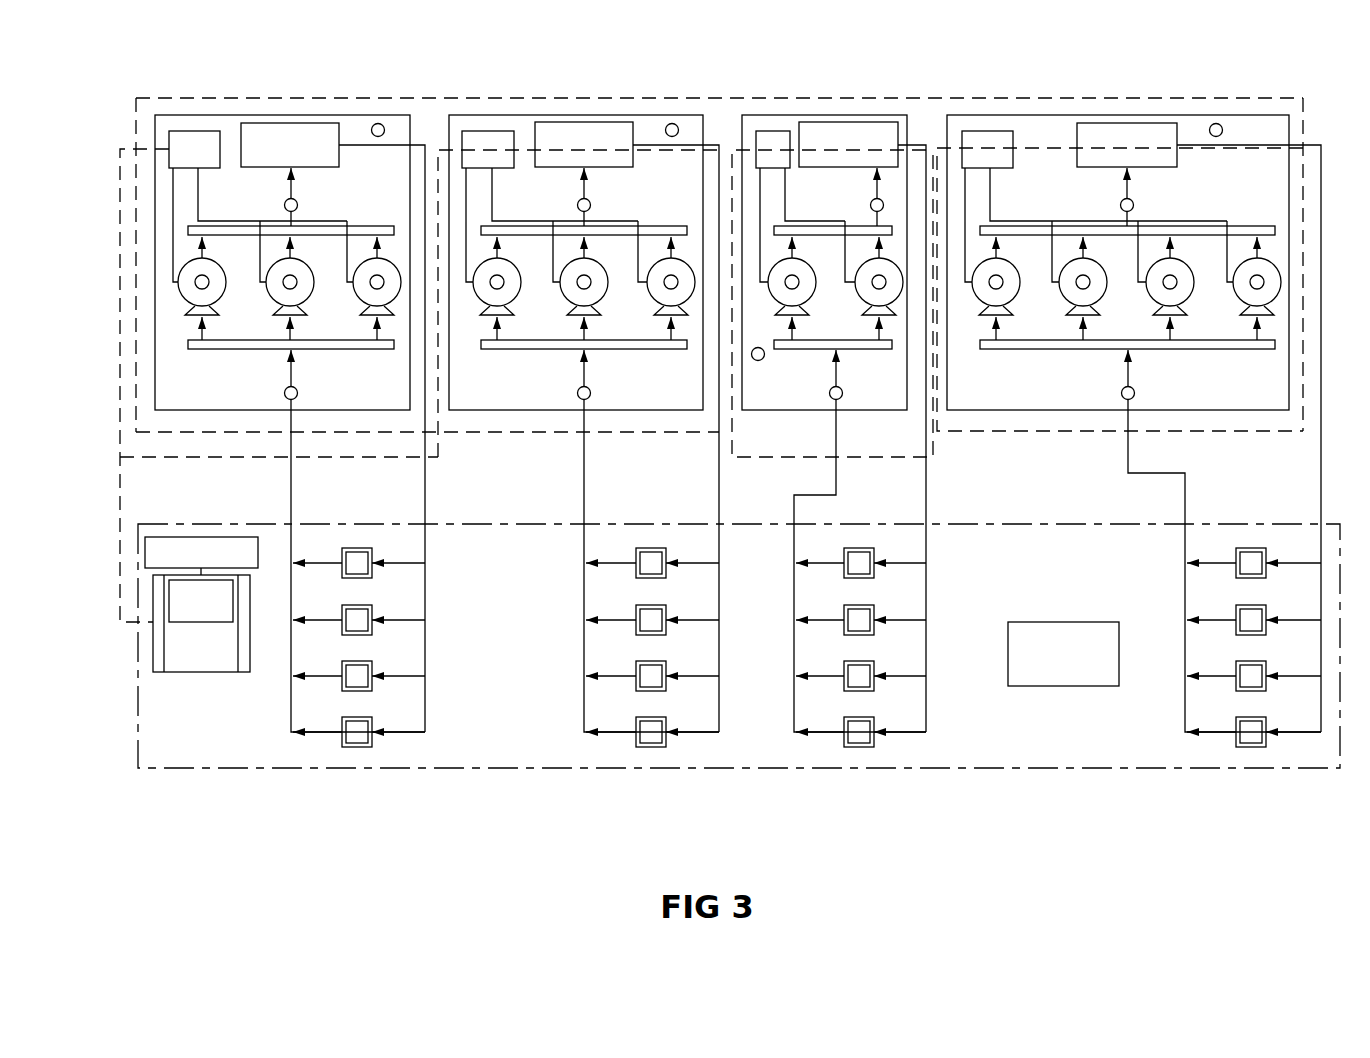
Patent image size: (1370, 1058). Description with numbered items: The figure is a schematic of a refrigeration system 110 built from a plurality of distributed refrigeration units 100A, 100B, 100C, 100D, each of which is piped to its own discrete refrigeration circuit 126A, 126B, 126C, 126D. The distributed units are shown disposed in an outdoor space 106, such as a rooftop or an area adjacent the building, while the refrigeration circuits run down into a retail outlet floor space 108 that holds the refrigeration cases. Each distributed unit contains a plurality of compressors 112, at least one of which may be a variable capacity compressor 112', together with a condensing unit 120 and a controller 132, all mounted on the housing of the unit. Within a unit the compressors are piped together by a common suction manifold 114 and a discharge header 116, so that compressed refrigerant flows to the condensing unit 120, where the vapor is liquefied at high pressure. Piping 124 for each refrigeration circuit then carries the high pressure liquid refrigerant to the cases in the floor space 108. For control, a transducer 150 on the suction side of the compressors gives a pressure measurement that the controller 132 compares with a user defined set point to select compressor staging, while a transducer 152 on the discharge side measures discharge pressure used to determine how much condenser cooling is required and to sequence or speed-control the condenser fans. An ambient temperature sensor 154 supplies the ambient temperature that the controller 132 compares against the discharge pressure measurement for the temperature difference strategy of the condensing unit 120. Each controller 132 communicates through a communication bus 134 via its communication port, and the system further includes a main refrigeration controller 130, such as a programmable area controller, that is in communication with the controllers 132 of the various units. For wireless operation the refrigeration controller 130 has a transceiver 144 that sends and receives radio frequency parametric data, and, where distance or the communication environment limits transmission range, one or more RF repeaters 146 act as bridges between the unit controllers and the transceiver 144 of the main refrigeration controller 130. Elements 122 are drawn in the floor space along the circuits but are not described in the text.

The distributed refrigeration unit 100A is at (253, 115).
The distributed refrigeration unit 100B is at (547, 115).
The distributed refrigeration unit 100C is at (812, 115).
The distributed refrigeration unit 100D is at (1087, 115).
The outdoor space 106 is at (138, 100).
The retail outlet floor space 108 is at (977, 768).
The refrigeration system 110 is at (1265, 75).
The compressor 112 is at (773, 288).
The variable capacity compressor 112' is at (618, 288).
The common suction manifold 114 is at (312, 350).
The discharge header 116 is at (362, 226).
The condensing unit 120 is at (300, 123).
The sensor node 122 is at (372, 575).
The piping 124 is at (427, 500).
The refrigeration circuit 126A is at (298, 505).
The refrigeration circuit 126B is at (590, 505).
The refrigeration circuit 126C is at (800, 515).
The refrigeration circuit 126D is at (1192, 495).
The refrigeration controller 130 is at (203, 672).
The controller 132 is at (199, 131).
The communication bus 134 is at (120, 490).
The transceiver 144 is at (241, 537).
The RF repeater 146 is at (1063, 686).
The transducer 150 is at (284, 393).
The transducer 152 is at (284, 205).
The ambient temperature sensor 154 is at (378, 123).